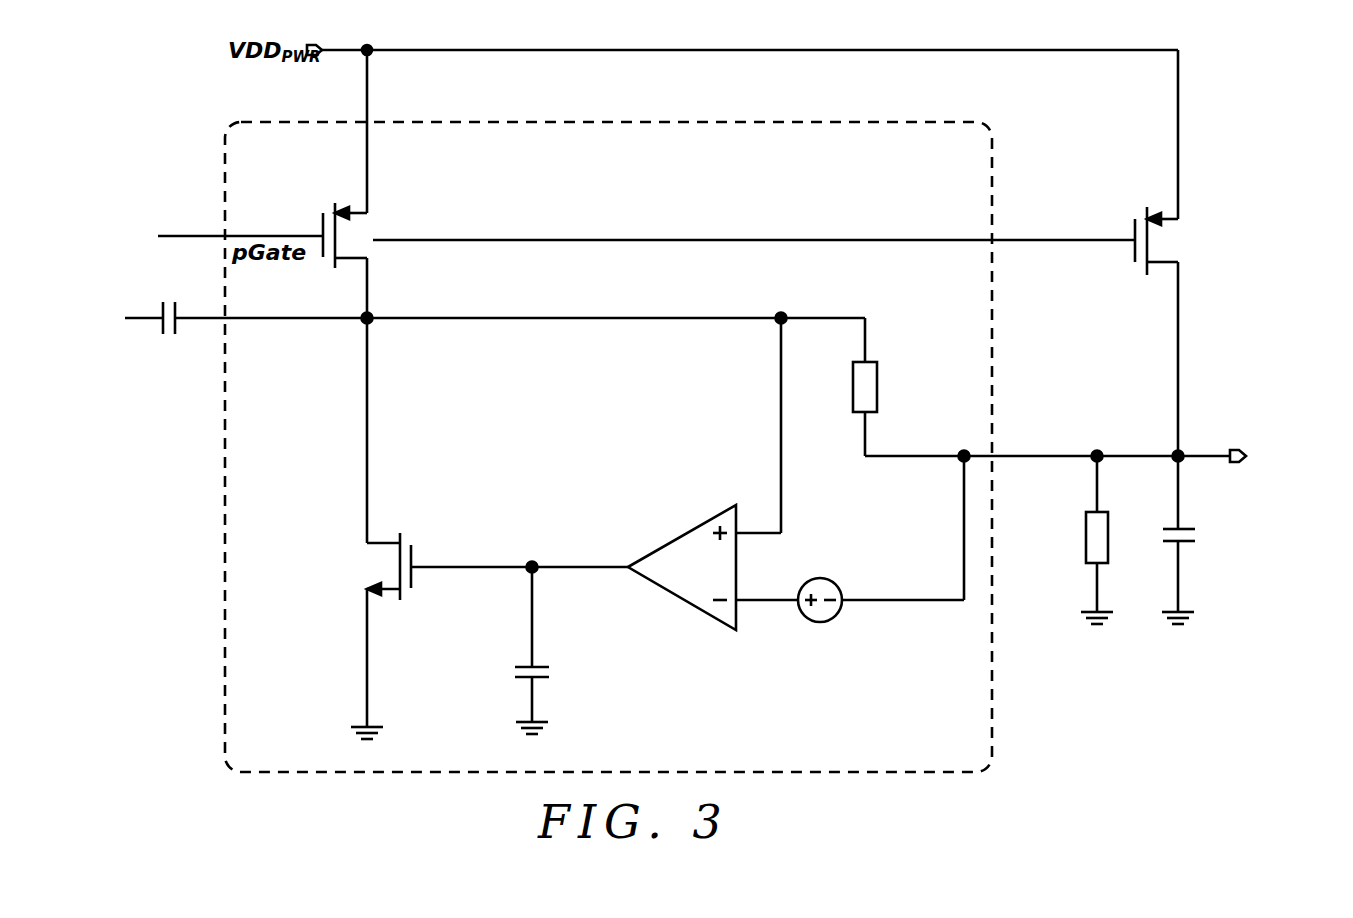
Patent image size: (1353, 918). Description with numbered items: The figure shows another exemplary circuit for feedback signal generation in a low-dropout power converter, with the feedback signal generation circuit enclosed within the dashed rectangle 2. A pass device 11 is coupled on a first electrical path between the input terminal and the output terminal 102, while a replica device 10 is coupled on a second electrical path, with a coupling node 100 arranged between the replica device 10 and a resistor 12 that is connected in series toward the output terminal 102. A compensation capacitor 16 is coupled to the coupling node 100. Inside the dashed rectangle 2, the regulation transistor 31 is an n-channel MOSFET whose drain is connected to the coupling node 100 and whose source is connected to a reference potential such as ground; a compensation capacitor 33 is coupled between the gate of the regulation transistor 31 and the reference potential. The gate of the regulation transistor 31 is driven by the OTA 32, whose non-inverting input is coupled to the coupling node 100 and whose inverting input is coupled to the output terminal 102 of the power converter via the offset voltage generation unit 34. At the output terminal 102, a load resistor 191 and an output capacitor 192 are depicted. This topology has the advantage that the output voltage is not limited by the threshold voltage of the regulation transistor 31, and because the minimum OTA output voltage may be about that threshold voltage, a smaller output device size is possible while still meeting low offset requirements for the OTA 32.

The dashed rectangle 2 is at (896, 122).
The replica device 10 is at (370, 226).
The pass device 11 is at (1175, 232).
The resistor 12 is at (878, 378).
The compensation capacitor 16 is at (161, 306).
The regulation transistor 31 is at (378, 605).
The OTA 32 is at (693, 610).
The compensation capacitor 33 is at (553, 672).
The offset voltage generation unit 34 is at (836, 583).
The coupling node 100 is at (372, 309).
The output terminal 102 is at (1232, 450).
The load resistor 191 is at (1085, 552).
The output capacitor 192 is at (1200, 534).